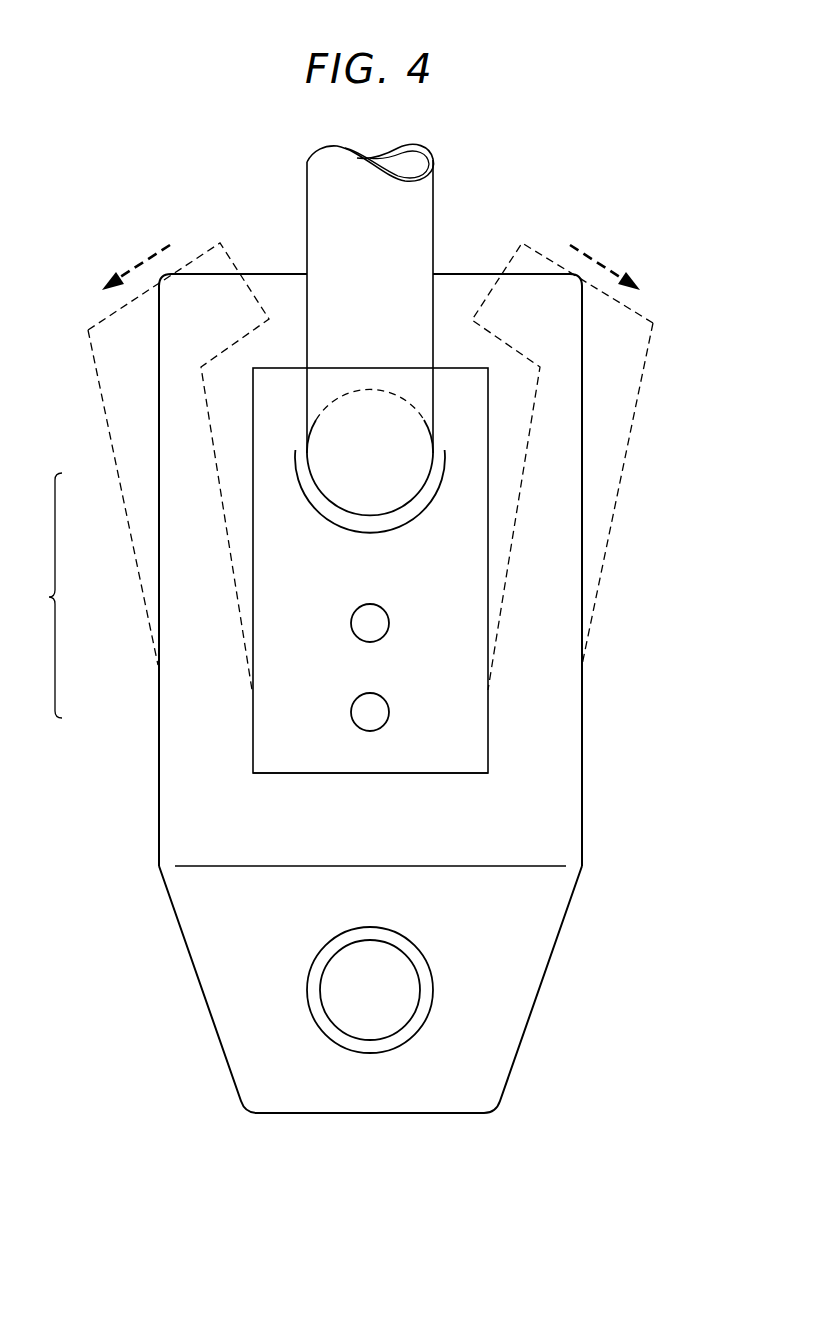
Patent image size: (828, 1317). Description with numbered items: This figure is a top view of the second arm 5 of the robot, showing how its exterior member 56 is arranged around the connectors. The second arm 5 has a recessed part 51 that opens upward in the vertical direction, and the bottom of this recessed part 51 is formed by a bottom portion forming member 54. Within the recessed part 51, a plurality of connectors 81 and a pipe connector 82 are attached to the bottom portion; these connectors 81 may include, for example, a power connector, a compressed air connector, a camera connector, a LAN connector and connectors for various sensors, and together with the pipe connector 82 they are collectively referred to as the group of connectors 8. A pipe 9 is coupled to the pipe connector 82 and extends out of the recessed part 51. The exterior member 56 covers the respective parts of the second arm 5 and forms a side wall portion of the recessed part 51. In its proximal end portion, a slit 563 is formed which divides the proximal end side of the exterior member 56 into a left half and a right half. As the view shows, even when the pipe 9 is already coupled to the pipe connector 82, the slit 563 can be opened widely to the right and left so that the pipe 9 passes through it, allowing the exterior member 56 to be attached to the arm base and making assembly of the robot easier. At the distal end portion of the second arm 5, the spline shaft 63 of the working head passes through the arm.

The second arm 5 is at (200, 1001).
The group of connectors 8 is at (46, 595).
The pipe 9 is at (412, 242).
The recessed part 51 is at (453, 592).
The bottom portion forming member 54 is at (435, 675).
The exterior member 56 is at (542, 818).
The spline shaft 63 is at (368, 1010).
The connectors 81 is at (370, 623).
The pipe connector 82 is at (300, 474).
The slit 563 is at (237, 263).